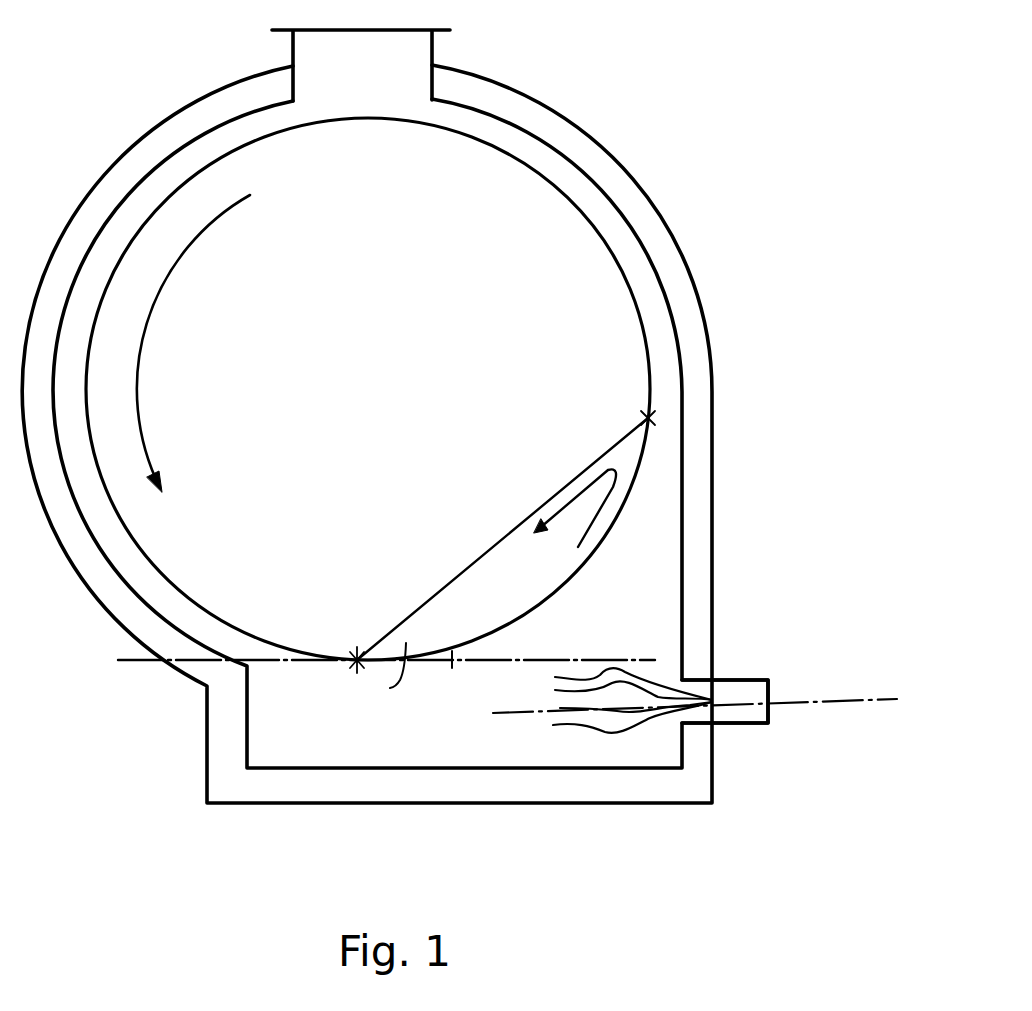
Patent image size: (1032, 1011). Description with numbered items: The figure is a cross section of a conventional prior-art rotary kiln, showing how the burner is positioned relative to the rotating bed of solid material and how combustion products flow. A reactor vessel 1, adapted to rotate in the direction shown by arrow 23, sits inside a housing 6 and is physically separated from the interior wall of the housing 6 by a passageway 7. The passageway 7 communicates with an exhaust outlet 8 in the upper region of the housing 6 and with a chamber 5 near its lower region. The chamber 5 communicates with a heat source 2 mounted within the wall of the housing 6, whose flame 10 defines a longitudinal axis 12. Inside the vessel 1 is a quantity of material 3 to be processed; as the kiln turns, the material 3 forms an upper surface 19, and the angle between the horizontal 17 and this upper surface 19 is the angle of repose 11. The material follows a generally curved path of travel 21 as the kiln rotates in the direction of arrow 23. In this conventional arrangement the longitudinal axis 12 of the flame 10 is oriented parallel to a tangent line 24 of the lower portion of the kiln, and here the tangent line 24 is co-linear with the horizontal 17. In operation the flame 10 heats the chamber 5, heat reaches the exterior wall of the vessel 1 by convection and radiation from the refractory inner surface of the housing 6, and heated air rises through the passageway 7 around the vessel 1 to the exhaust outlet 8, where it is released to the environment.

The reactor vessel 1 is at (627, 280).
The heat source 2 is at (733, 680).
The material 3 is at (378, 671).
The chamber 5 is at (321, 740).
The housing 6 is at (135, 172).
The passageway 7 is at (557, 170).
The exhaust outlet 8 is at (433, 50).
The flame 10 is at (617, 710).
The angle of repose 11 is at (430, 605).
The longitudinal axis 12 is at (860, 700).
The horizontal 17 is at (530, 660).
The upper surface 19 is at (498, 543).
The curved path of travel 21 is at (607, 493).
The arrow 23 is at (143, 333).
The tangent line 24 is at (320, 660).